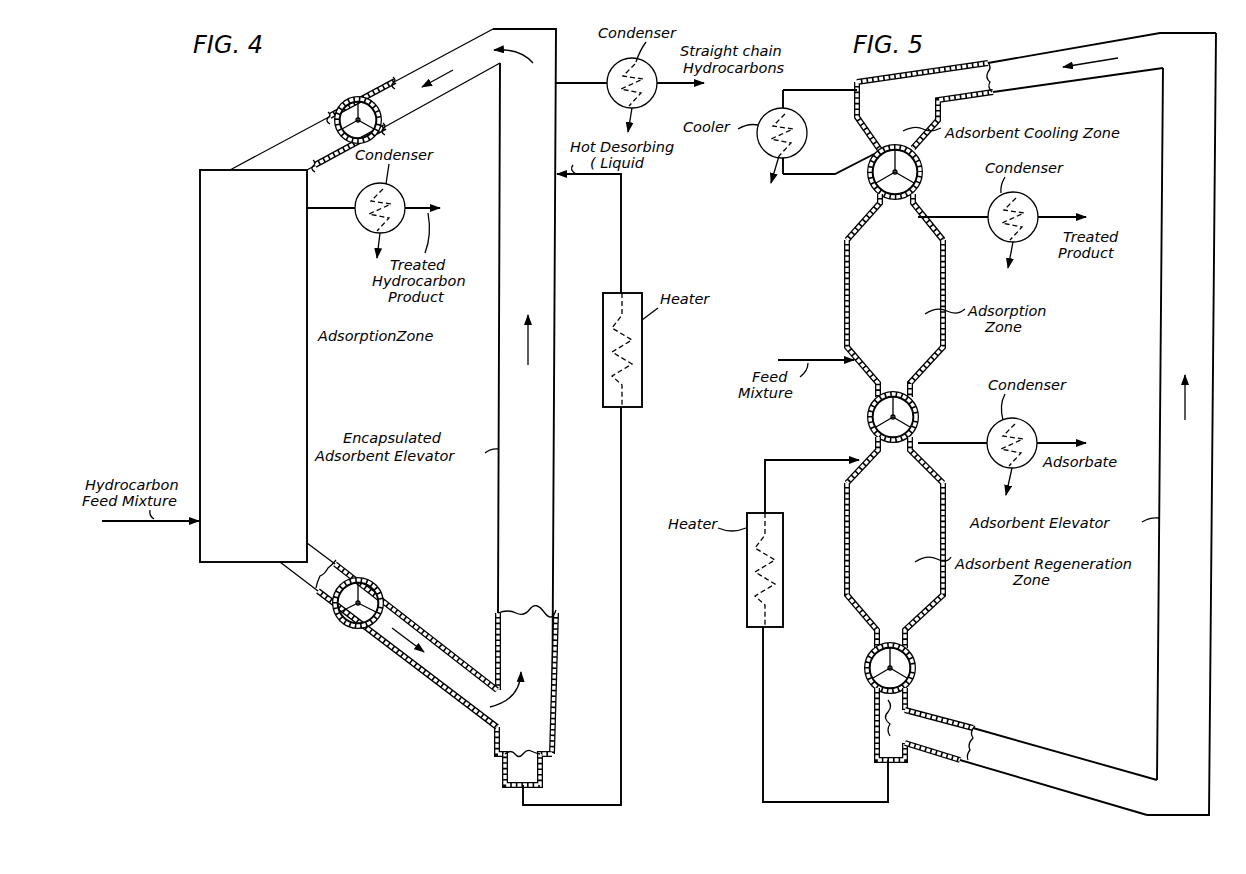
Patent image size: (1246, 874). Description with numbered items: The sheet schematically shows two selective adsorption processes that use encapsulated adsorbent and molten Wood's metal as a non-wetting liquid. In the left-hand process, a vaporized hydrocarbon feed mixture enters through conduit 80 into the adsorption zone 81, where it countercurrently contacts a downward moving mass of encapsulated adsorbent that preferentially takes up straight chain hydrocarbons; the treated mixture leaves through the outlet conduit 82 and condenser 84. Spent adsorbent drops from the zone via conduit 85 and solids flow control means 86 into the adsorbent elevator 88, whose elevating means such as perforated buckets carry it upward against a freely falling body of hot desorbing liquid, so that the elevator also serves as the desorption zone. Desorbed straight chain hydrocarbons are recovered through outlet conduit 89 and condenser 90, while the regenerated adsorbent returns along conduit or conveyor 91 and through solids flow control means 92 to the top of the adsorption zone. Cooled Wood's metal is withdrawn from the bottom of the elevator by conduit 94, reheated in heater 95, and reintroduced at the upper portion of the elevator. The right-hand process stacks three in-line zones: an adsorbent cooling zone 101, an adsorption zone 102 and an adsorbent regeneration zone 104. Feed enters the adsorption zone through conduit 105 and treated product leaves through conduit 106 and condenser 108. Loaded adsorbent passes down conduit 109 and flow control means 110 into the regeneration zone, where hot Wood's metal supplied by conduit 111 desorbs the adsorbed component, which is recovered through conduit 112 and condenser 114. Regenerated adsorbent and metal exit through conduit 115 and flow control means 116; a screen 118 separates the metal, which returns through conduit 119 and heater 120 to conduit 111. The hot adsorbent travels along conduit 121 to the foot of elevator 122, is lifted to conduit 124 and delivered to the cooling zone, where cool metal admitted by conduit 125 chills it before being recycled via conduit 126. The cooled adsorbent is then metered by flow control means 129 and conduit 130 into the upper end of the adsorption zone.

In FIG. 4, the conduit 80 is at (128, 521).
In FIG. 4, the adsorption zone 81 is at (308, 331).
In FIG. 4, the outlet conduit 82 is at (327, 207).
In FIG. 4, the condenser 84 is at (404, 207).
In FIG. 4, the conduit 85 is at (327, 555).
In FIG. 4, the solids flow control means 86 is at (368, 594).
In FIG. 4, the adsorbent elevator 88 is at (500, 364).
In FIG. 4, the outlet conduit 89 is at (583, 67).
In FIG. 4, the condenser 90 is at (608, 95).
In FIG. 4, the conduit or conveyor 91 is at (428, 68).
In FIG. 4, the solids flow control means 92 is at (358, 102).
In FIG. 4, the conduit 94 is at (571, 805).
In FIG. 4, the heater 95 is at (649, 343).
In FIG. 5, the adsorbent cooling zone 101 is at (868, 131).
In FIG. 5, the adsorption zone 102 is at (915, 296).
In FIG. 5, the adsorbent regeneration zone 104 is at (909, 550).
In FIG. 5, the conduit 105 is at (797, 359).
In FIG. 5, the conduit 106 is at (1080, 213).
In FIG. 5, the condenser 108 is at (1034, 206).
In FIG. 5, the conduit 109 is at (912, 394).
In FIG. 5, the flow control means 110 is at (870, 416).
In FIG. 5, the conduit 111 is at (764, 479).
In FIG. 5, the conduit 112 is at (940, 448).
In FIG. 5, the condenser 114 is at (1036, 441).
In FIG. 5, the conduit 115 is at (910, 650).
In FIG. 5, the flow control means 116 is at (902, 670).
In FIG. 5, the screen 118 is at (762, 150).
In FIG. 5, the conduit 119 is at (832, 792).
In FIG. 5, the heater 120 is at (747, 582).
In FIG. 5, the conduit 121 is at (1034, 750).
In FIG. 5, the elevator 122 is at (1159, 299).
In FIG. 5, the conduit 124 is at (1059, 52).
In FIG. 5, the conduit 125 is at (830, 89).
In FIG. 5, the conduit 126 is at (792, 178).
In FIG. 5, the flow control means 129 is at (877, 188).
In FIG. 5, the conduit 130 is at (916, 207).